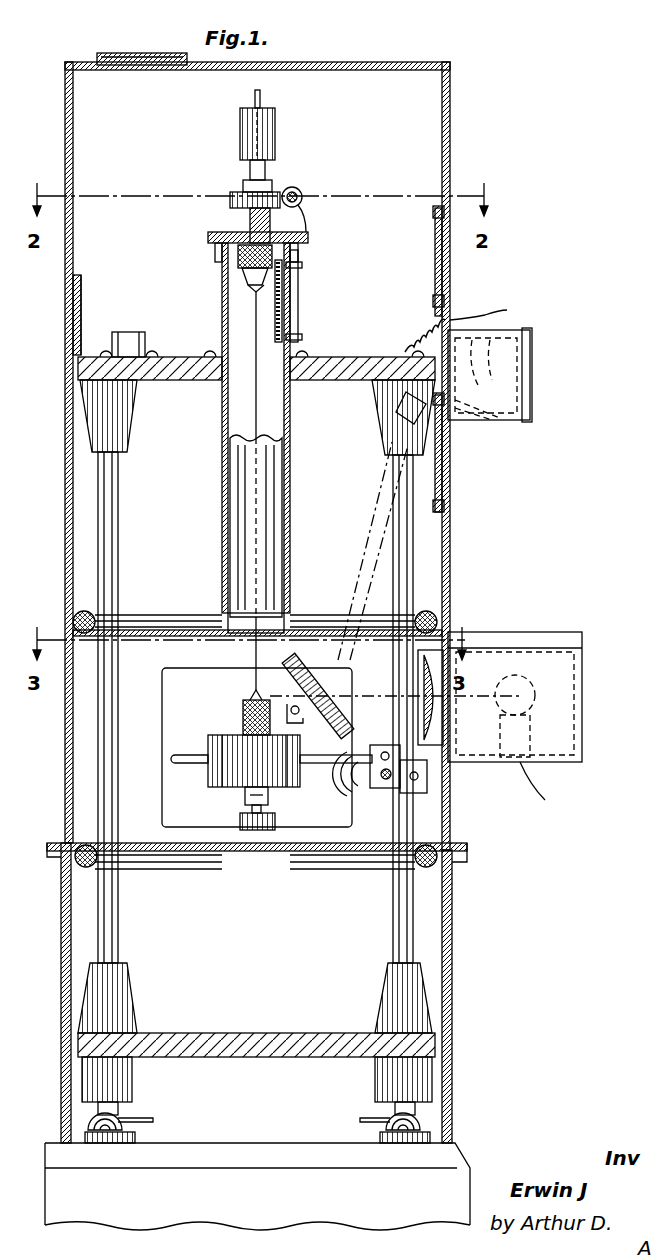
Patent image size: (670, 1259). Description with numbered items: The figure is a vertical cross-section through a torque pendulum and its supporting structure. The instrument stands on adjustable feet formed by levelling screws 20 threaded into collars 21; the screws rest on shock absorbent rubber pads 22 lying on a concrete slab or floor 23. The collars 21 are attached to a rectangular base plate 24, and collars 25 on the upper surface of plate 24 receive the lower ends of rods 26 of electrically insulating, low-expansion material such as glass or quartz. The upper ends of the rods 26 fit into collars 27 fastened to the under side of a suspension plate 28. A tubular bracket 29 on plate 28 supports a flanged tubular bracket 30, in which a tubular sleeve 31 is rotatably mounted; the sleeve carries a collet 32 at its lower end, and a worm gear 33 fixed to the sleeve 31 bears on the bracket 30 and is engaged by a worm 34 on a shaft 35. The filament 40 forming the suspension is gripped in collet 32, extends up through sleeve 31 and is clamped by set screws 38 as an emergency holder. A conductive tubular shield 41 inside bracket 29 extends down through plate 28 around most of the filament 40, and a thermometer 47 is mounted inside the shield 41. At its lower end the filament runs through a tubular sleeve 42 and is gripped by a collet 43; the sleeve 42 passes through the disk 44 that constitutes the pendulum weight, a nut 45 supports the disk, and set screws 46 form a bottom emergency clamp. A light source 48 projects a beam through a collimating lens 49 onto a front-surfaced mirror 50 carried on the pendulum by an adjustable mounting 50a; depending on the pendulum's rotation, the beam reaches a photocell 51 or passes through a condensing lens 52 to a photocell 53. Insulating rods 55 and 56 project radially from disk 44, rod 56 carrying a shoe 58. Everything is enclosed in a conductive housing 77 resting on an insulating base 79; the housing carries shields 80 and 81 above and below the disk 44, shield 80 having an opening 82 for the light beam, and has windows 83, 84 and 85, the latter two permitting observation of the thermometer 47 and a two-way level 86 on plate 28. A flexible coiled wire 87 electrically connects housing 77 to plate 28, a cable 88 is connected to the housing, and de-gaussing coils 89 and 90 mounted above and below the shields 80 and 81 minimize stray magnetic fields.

The levelling screw 20 is at (118, 1122).
The collar 21 is at (120, 1080).
The rubber pad 22 is at (135, 1141).
The concrete slab or floor 23 is at (455, 1190).
The base plate 24 is at (265, 1047).
The collar 25 is at (117, 985).
The rod 26 is at (116, 545).
The collar 27 is at (128, 415).
The suspension plate 28 is at (340, 370).
The tubular bracket 29 is at (222, 308).
The flanged tubular bracket 30 is at (222, 236).
The tubular sleeve 31 is at (250, 166).
The collet 32 is at (270, 282).
The worm gear 33 is at (276, 192).
The worm 34 is at (302, 194).
The shaft 35 is at (304, 208).
The set screws 38 is at (275, 152).
The filament 40 is at (285, 620).
The tubular shield 41 is at (282, 524).
The tubular sleeve 42 is at (262, 808).
The collet 43 is at (245, 712).
The disk 44 is at (218, 745).
The nut 45 is at (245, 797).
The set screws 46 is at (276, 822).
The thermometer 47 is at (300, 306).
The light source 48 is at (555, 680).
The collimating lens 49 is at (437, 722).
The mirror 50 is at (340, 700).
The adjustable mounting 50a is at (293, 706).
The photocell 51 is at (404, 412).
The condensing lens 52 is at (480, 420).
The photocell 53 is at (532, 354).
The rod 55 is at (192, 763).
The rod 56 is at (332, 763).
The shoe 58 is at (400, 775).
The housing 77 is at (65, 560).
The base 79 is at (61, 965).
The shield 80 is at (150, 633).
The shield 81 is at (160, 828).
The opening 82 is at (344, 626).
The window 83 is at (443, 476).
The window 84 is at (138, 53).
The window 85 is at (73, 300).
The two-way level 86 is at (128, 333).
The flexible coiled wire 87 is at (406, 350).
The cable 88 is at (476, 314).
The de-gaussing coil 89 is at (135, 623).
The de-gaussing coil 90 is at (255, 868).